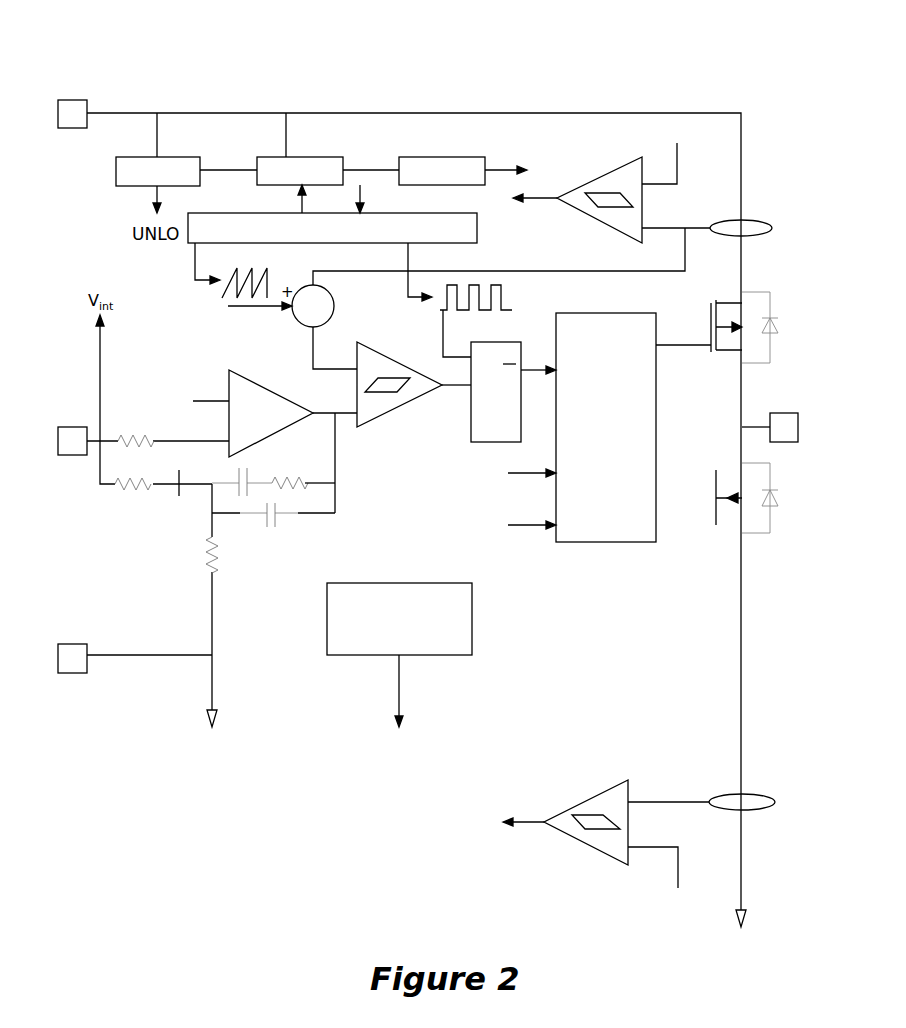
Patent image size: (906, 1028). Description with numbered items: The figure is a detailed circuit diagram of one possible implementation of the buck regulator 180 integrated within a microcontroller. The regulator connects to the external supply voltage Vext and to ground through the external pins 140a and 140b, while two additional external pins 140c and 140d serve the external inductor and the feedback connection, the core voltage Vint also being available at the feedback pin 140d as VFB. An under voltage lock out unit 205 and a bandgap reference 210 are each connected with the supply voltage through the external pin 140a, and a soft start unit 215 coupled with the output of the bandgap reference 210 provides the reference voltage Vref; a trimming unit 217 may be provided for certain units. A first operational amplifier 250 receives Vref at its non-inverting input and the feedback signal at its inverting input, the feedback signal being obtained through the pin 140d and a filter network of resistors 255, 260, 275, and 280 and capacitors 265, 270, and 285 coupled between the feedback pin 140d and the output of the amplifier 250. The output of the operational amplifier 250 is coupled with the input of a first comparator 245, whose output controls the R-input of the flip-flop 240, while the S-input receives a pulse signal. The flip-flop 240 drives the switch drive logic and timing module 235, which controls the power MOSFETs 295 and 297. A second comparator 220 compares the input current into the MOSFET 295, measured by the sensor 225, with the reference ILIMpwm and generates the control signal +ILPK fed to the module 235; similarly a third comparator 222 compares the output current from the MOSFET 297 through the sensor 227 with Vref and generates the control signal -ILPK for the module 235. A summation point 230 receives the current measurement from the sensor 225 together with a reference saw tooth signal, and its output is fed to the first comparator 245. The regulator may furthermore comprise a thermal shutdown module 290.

The buck regulator 180 is at (437, 51).
The external pin 140a is at (78, 118).
The external pin 140b is at (72, 653).
The first additional external pin 140c is at (783, 434).
The second additional external pin 140d is at (75, 433).
The under voltage lock out unit 205 is at (183, 157).
The bandgap reference 210 is at (318, 157).
The soft start unit 215 is at (428, 157).
The trimming unit 217 is at (215, 213).
The second comparator 220 is at (643, 210).
The third comparator 222 is at (623, 784).
The sensor 225 is at (753, 221).
The sensor 227 is at (748, 797).
The summation point 230 is at (336, 303).
The switch drive logic and timing module 235 is at (588, 313).
The flip-flop 240 is at (488, 342).
The first comparator 245 is at (370, 352).
The first operational amplifier 250 is at (245, 374).
The resistor 255 is at (141, 431).
The resistor 260 is at (125, 482).
The capacitor 265 is at (183, 474).
The capacitor 270 is at (242, 474).
The resistor 275 is at (303, 471).
The resistor 280 is at (231, 605).
The capacitor 285 is at (273, 526).
The thermal shutdown module 290 is at (402, 583).
The power MOSFET 295 is at (737, 335).
The power MOSFET 297 is at (734, 489).